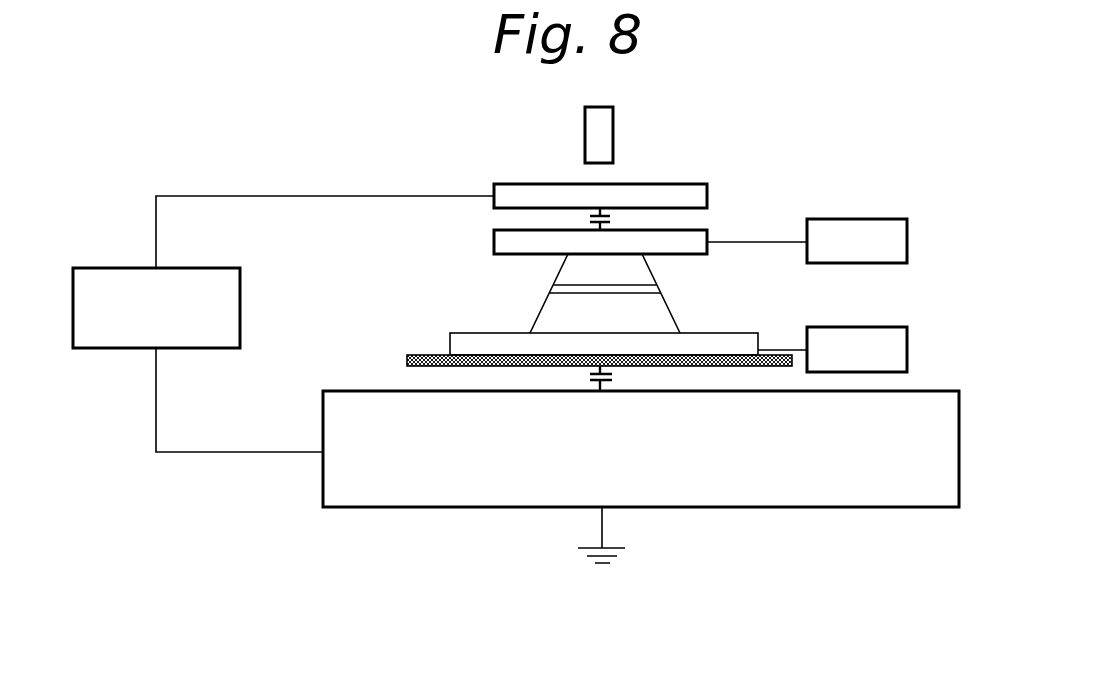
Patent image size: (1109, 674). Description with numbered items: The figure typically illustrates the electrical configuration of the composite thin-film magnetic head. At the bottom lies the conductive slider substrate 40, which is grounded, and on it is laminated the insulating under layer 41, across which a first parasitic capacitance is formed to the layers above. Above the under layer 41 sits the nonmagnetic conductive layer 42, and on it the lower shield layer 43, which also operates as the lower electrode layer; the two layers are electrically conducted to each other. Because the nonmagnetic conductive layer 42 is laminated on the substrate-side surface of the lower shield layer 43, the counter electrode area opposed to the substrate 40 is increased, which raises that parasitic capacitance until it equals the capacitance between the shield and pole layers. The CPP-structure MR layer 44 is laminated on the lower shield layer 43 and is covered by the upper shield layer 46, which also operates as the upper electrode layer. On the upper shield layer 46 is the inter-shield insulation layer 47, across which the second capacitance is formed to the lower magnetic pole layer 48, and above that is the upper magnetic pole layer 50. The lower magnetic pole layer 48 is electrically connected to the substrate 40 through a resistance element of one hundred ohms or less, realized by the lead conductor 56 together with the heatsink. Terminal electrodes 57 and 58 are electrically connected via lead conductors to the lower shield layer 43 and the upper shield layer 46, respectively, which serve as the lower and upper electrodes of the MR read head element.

The substrate 40 is at (935, 495).
The under layer 41 is at (449, 379).
The nonmagnetic conductive layer 42 is at (407, 360).
The lower shield layer 43 is at (472, 348).
The MR layer 44 is at (535, 290).
The upper shield layer 46 is at (501, 240).
The inter-shield insulation layer 47 is at (504, 219).
The lower magnetic pole layer 48 is at (508, 190).
The upper magnetic pole layer 50 is at (613, 132).
The lead conductor 56 is at (240, 300).
The terminal electrode 57 is at (893, 347).
The terminal electrode 58 is at (893, 239).